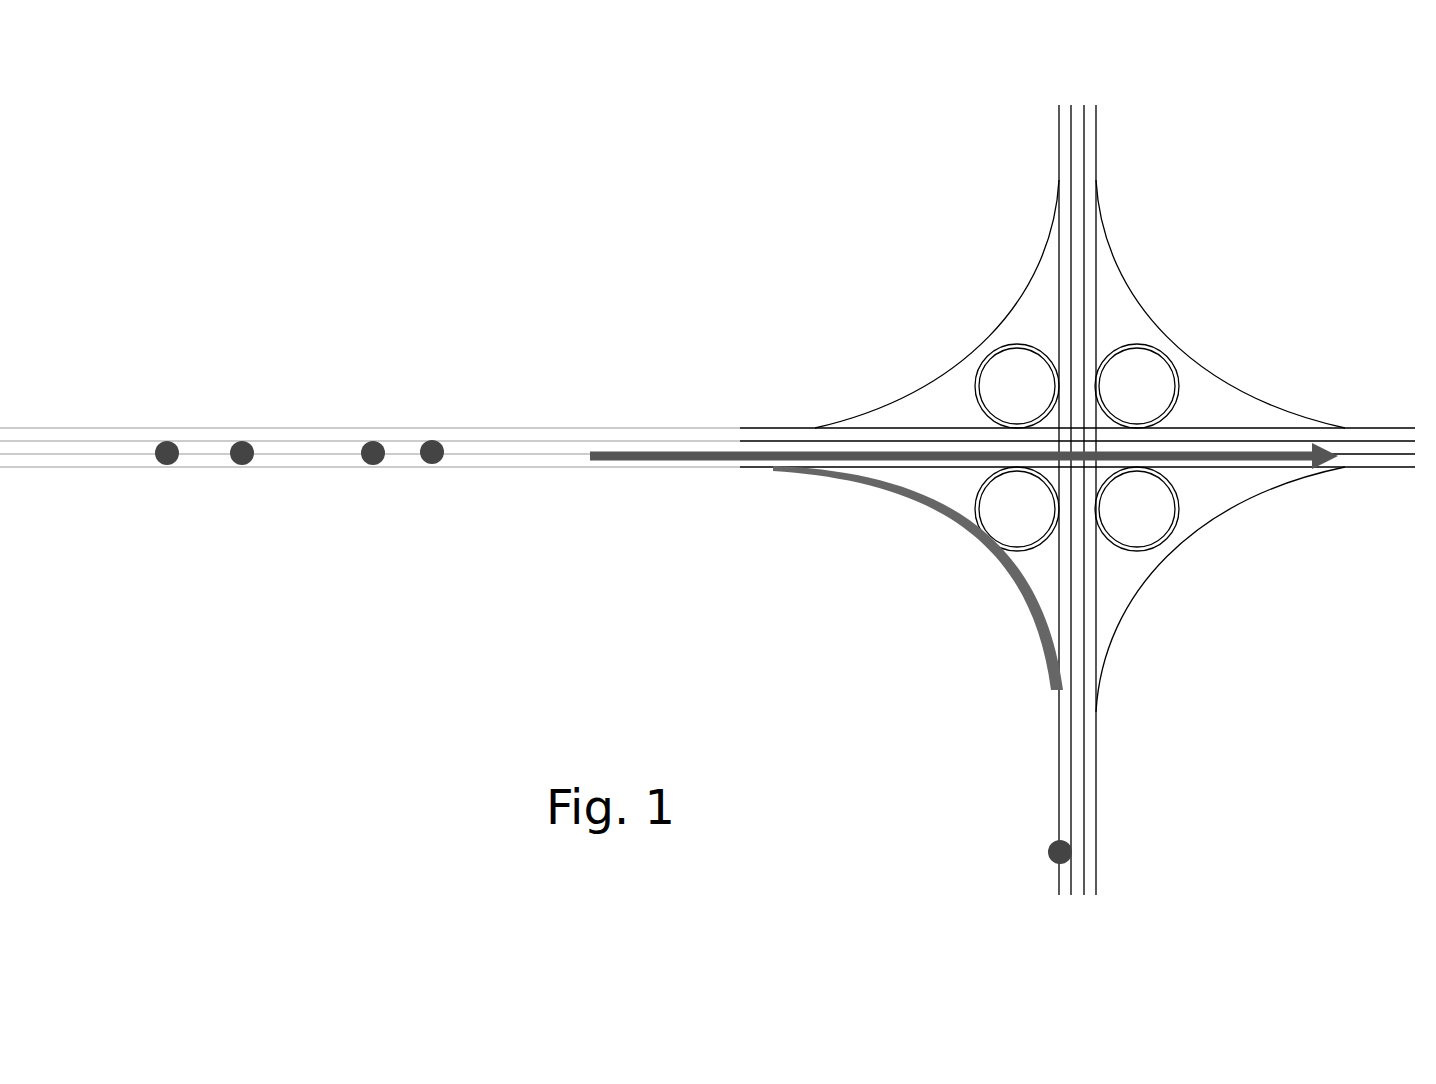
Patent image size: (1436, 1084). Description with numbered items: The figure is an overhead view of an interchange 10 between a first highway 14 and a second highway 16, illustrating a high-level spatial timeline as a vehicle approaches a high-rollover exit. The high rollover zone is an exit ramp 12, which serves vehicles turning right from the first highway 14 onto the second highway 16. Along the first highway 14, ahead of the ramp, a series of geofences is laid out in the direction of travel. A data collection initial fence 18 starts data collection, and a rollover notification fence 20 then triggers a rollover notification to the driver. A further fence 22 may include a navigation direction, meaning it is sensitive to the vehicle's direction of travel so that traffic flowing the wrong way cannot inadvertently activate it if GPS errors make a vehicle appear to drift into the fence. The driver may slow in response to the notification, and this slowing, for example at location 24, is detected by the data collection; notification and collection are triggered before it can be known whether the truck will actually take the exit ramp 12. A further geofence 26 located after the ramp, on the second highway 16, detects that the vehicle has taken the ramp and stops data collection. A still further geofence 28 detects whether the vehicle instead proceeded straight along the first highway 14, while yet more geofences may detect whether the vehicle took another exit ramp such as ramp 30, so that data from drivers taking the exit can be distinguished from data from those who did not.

The interchange 10 is at (860, 262).
The exit ramp 12 is at (985, 563).
The first highway 14 is at (602, 430).
The second highway 16 is at (1094, 105).
The data collection initial fence 18 is at (167, 441).
The rollover notification fence 20 is at (242, 441).
The further fence 22 is at (373, 441).
The location 24 is at (432, 465).
The further geofence 26 is at (1048, 852).
The still further geofence 28 is at (1273, 468).
The ramp 30 is at (1171, 531).